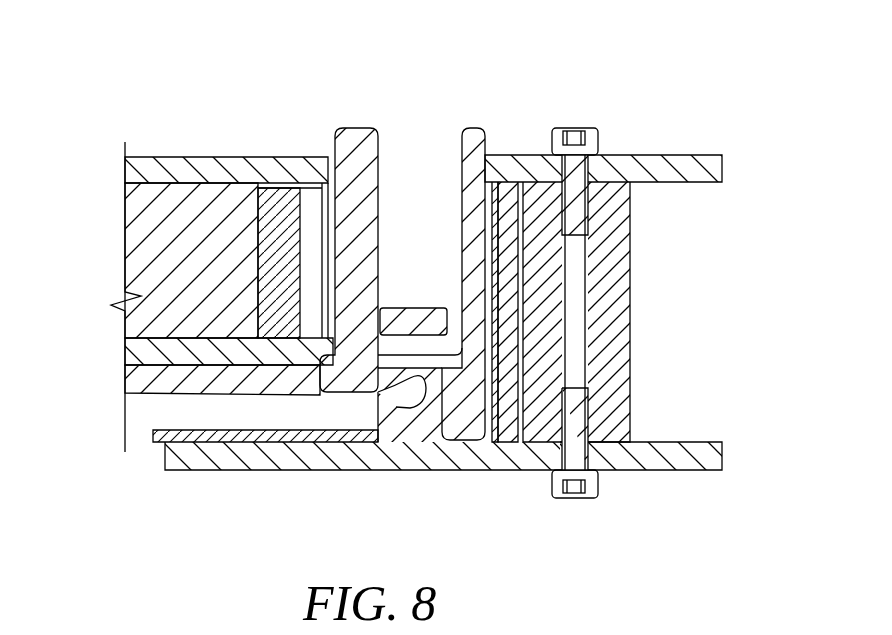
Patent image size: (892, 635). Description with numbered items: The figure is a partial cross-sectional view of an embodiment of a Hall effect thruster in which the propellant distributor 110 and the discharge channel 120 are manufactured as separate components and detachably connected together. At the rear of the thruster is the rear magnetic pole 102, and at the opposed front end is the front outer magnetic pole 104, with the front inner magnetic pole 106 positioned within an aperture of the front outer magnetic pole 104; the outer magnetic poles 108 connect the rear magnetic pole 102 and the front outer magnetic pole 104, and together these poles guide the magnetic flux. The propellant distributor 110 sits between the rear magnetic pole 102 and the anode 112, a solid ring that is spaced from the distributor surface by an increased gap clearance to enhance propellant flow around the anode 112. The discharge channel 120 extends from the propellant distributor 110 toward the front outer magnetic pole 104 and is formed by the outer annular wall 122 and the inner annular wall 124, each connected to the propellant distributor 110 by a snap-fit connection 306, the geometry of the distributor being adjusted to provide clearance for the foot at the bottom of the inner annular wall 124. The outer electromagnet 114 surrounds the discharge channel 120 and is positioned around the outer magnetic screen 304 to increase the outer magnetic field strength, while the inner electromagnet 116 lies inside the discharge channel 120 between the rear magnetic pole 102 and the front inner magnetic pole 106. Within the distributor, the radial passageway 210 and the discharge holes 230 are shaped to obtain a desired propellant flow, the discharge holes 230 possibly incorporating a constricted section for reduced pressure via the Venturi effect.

The rear magnetic pole 102 is at (690, 442).
The front outer magnetic pole 104 is at (676, 155).
The front inner magnetic pole 106 is at (163, 157).
The outer magnetic poles 108 is at (628, 312).
The propellant distributor 110 is at (305, 433).
The anode 112 is at (410, 308).
The outer electromagnet 114 is at (505, 276).
The inner electromagnet 116 is at (272, 222).
The discharge channel 120 is at (362, 287).
The outer annular wall 122 is at (477, 128).
The inner annular wall 124 is at (357, 128).
The radial passageway 210 is at (396, 407).
The discharge holes 230 is at (413, 389).
The outer magnetic screen 304 is at (272, 292).
The snap-fit connection 306 is at (310, 378).